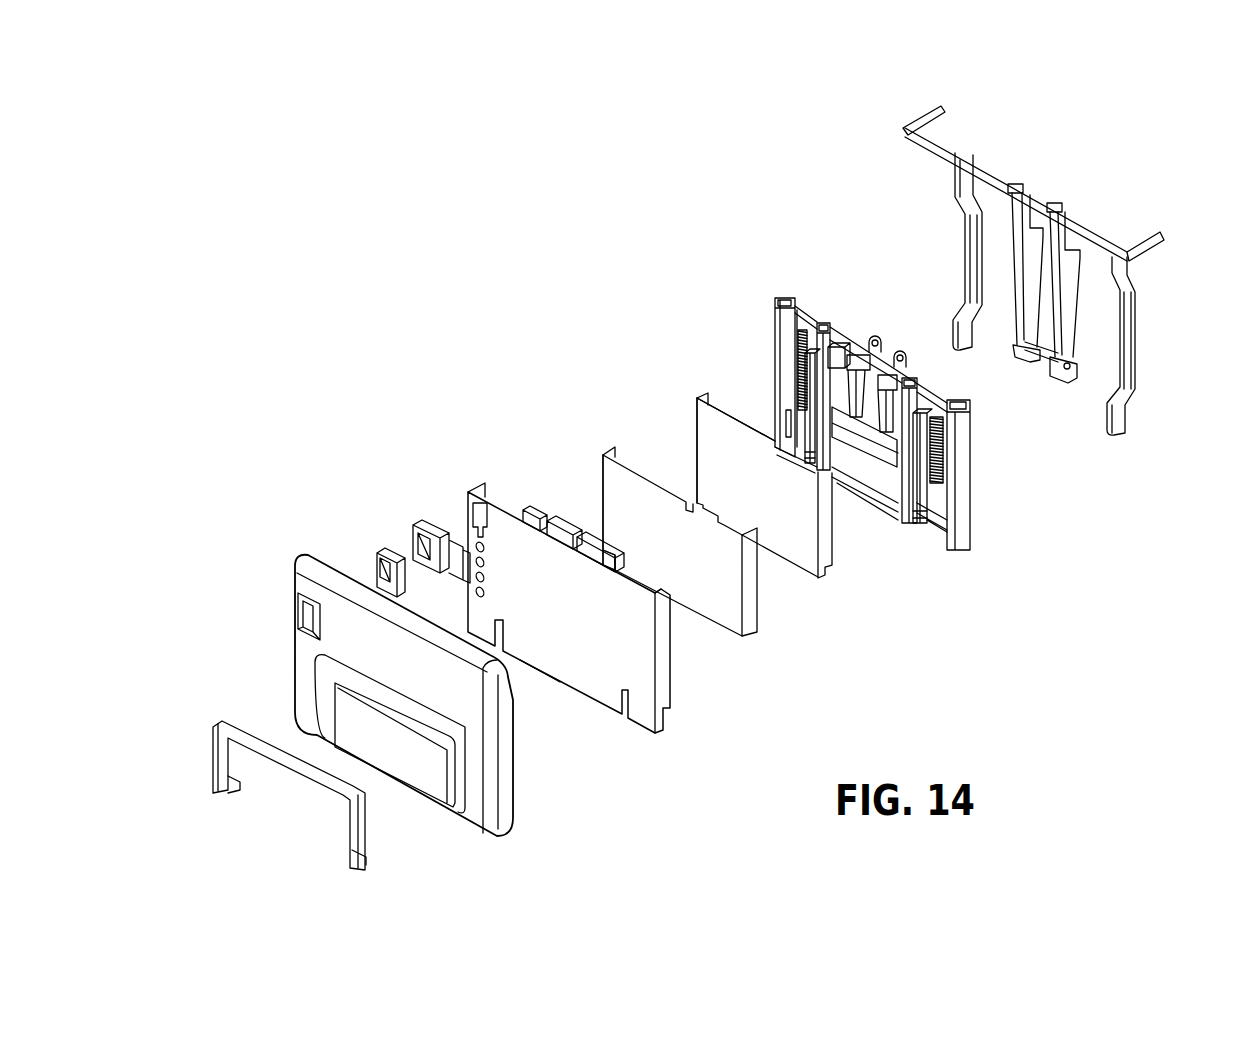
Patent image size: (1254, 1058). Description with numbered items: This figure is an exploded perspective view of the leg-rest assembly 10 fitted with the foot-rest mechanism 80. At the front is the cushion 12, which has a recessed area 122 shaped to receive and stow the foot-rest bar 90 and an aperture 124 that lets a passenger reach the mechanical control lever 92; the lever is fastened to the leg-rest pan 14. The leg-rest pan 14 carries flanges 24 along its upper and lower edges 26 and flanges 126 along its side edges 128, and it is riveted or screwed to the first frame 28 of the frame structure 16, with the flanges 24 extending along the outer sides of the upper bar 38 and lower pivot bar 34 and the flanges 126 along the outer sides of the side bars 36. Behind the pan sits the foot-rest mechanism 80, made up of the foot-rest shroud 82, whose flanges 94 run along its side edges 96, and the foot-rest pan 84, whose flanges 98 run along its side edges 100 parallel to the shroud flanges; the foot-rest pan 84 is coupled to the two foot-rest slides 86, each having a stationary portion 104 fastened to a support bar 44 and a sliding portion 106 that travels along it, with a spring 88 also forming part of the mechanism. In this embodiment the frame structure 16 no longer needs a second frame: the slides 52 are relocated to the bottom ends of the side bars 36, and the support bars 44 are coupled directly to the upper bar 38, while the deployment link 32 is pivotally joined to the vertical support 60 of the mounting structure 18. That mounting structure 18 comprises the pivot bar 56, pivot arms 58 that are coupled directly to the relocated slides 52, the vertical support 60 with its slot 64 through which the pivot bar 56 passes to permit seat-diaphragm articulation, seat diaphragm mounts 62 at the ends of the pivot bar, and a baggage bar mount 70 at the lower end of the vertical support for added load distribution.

The leg-rest assembly 10 is at (247, 686).
The cushion 12 is at (368, 694).
The leg-rest pan 14 is at (584, 602).
The frame structure 16 is at (866, 399).
The mounting structure 18 is at (1059, 260).
The flanges 24 is at (557, 528).
The upper and lower edges 26 is at (528, 512).
The first frame 28 is at (777, 360).
The deployment link 32 is at (870, 335).
The lower pivot bar 34 is at (893, 505).
The side bars 36 is at (785, 395).
The upper bar 38 is at (823, 323).
The support bars 44 is at (840, 455).
The slides 52 is at (790, 415).
The pivot bar 56 is at (1100, 240).
The pivot arms 58 is at (968, 247).
The vertical support 60 is at (1108, 285).
The seat diaphragm mounts 62 is at (942, 122).
The slot 64 is at (1050, 203).
The baggage bar mount 70 is at (1062, 382).
The foot-rest mechanism 80 is at (735, 497).
The foot-rest shroud 82 is at (708, 612).
The foot-rest pan 84 is at (765, 535).
The foot-rest slides 86 is at (808, 337).
The spring 88 is at (800, 340).
The foot-rest bar 90 is at (352, 856).
The mechanical control lever 92 is at (415, 521).
The flanges 94 is at (615, 457).
The side edges 96 is at (603, 470).
The flanges 98 is at (697, 398).
The side edges 100 is at (697, 467).
The stationary portion 104 is at (812, 428).
The sliding portion 106 is at (808, 452).
The recessed area 122 is at (450, 815).
The aperture 124 is at (297, 606).
The flanges 126 is at (475, 488).
The side edges 128 is at (468, 497).